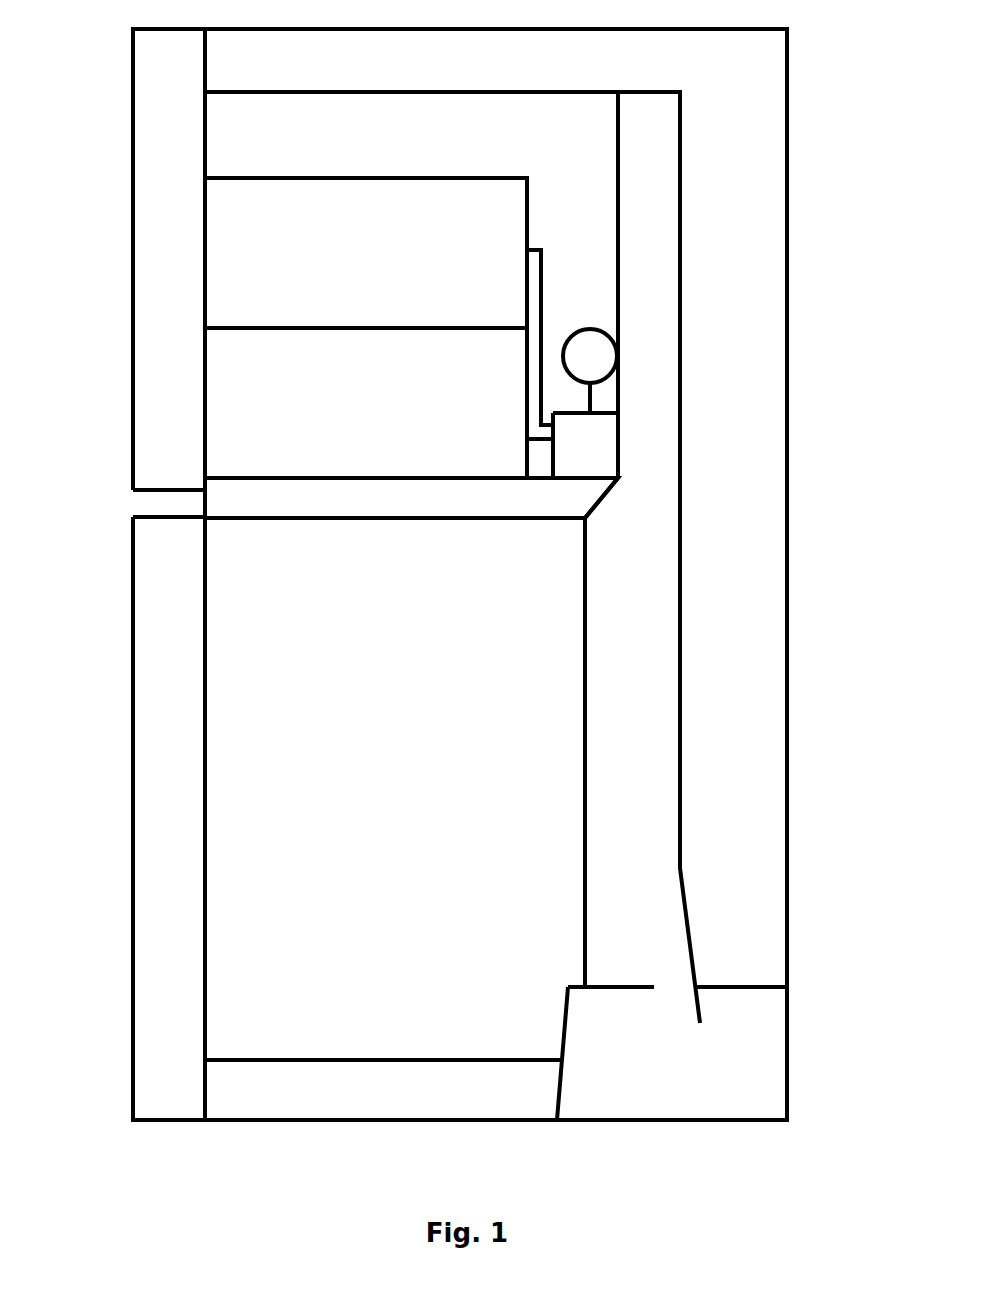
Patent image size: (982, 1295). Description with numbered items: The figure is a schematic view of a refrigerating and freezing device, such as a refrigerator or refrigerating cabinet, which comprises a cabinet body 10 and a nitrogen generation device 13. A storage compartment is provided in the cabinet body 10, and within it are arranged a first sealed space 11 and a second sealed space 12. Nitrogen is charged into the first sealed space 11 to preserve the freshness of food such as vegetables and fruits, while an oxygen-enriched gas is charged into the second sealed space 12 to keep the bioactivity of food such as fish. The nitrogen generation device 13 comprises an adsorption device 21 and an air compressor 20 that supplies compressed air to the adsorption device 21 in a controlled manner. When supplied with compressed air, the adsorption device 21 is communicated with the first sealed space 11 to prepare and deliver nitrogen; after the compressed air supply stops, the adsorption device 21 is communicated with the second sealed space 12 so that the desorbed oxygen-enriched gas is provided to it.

The cabinet body 10 is at (618, 245).
The first sealed space 11 is at (283, 382).
The second sealed space 12 is at (368, 292).
The nitrogen generation device 13 is at (620, 457).
The air compressor 20 is at (597, 357).
The adsorption device 21 is at (597, 453).